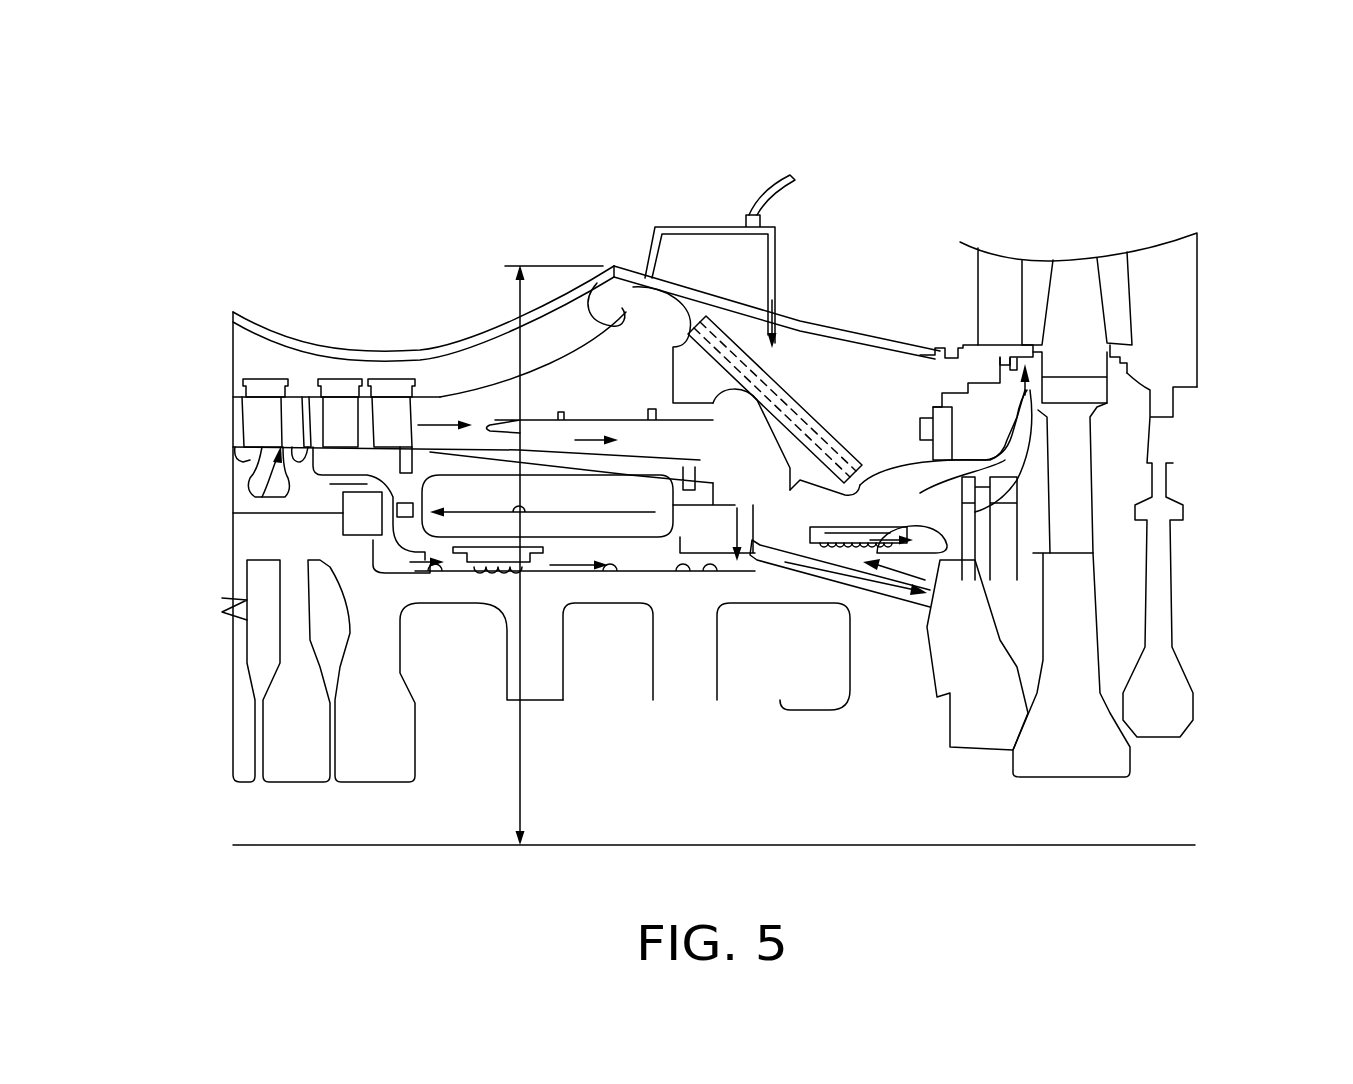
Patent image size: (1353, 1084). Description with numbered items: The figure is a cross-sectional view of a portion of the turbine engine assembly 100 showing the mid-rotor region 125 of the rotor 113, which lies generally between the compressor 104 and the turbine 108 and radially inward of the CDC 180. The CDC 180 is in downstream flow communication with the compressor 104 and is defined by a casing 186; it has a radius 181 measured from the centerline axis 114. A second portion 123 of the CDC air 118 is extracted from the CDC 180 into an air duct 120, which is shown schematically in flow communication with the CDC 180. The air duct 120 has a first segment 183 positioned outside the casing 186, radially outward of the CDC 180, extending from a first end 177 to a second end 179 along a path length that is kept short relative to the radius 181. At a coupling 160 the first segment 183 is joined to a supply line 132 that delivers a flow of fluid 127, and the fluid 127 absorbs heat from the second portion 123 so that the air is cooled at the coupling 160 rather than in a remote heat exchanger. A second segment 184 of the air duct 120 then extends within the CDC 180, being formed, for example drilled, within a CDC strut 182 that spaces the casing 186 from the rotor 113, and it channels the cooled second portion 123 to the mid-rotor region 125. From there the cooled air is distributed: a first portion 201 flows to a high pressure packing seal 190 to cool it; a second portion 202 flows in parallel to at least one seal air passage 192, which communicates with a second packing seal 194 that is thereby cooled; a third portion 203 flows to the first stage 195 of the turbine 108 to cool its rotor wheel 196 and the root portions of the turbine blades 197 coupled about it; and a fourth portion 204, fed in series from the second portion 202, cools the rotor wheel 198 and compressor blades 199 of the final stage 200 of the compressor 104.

The turbine engine assembly 100 is at (483, 122).
The compressor 104 is at (273, 242).
The turbine 108 is at (1148, 208).
The rotor 113 is at (183, 656).
The centerline axis 114 is at (400, 847).
The CDC air 118 is at (437, 395).
The air duct 120 is at (792, 261).
The second portion of CDC air 123 is at (778, 332).
The mid-rotor region 125 is at (933, 735).
The fluid 127 is at (815, 165).
The supply line 132 is at (782, 182).
The coupling 160 is at (738, 217).
The first end 177 is at (751, 286).
The second end 179 is at (669, 260).
The CDC 180 is at (852, 395).
The radius 181 is at (517, 347).
The CDC strut 182 is at (745, 439).
The first segment 183 is at (660, 227).
The second segment 184 is at (778, 378).
The casing 186 is at (617, 263).
The high pressure packing seal 190 is at (870, 568).
The seal air passage 192 is at (470, 495).
The second packing seal 194 is at (493, 592).
The turbine stage 195 is at (1043, 203).
The rotor wheel 196 is at (1087, 440).
The turbine blades 197 is at (1100, 285).
The rotor wheel 198 is at (273, 543).
The compressor blades 199 is at (298, 407).
The compressor stage 200 is at (303, 320).
The first portion of cooled air 201 is at (880, 522).
The second portion of cooled air 202 is at (540, 512).
The third portion of cooled air 203 is at (1017, 430).
The fourth portion of cooled air 204 is at (330, 497).